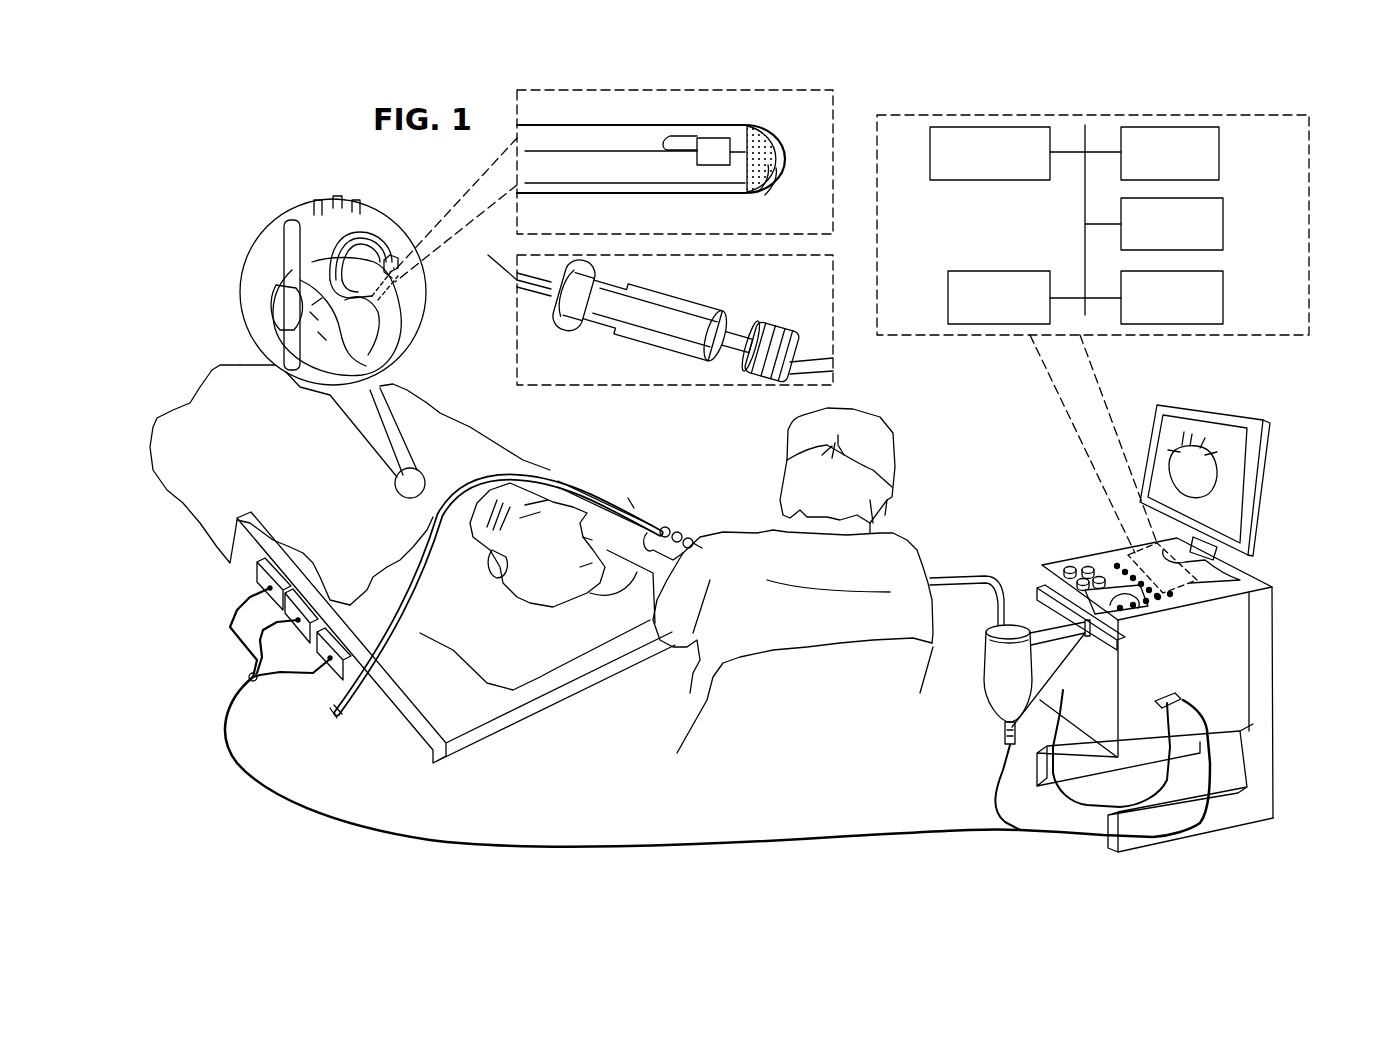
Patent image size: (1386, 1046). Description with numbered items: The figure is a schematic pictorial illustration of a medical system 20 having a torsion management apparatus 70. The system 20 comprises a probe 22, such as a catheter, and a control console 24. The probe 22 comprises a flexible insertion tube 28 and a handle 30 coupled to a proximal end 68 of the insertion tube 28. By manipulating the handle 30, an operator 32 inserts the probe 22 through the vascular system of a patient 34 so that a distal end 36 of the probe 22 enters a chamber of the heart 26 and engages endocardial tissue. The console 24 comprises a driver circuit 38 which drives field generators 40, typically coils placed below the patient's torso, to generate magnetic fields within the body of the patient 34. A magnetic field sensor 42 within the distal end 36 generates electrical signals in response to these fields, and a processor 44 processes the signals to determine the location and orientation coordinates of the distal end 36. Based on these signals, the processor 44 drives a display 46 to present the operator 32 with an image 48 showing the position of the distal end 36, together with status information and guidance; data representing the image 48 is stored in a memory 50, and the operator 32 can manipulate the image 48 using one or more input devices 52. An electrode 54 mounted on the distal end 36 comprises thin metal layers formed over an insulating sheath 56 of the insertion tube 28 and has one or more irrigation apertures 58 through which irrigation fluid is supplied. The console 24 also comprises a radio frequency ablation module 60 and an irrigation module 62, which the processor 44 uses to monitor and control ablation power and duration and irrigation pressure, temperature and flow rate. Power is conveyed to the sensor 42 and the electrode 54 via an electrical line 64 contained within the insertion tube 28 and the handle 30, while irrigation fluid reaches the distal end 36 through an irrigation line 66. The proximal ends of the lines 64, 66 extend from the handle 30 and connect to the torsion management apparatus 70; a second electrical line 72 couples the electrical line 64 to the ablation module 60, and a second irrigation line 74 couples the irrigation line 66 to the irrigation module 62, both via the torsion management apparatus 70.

The medical system 20 is at (276, 172).
The probe 22 is at (631, 510).
The control console 24 is at (1276, 574).
The heart 26 is at (403, 337).
The flexible insertion tube 28 is at (524, 296).
The handle 30 is at (686, 296).
The operator 32 is at (898, 556).
The patient 34 is at (508, 600).
The distal end 36 is at (366, 232).
The driver circuit 38 is at (948, 298).
The field generators 40 is at (262, 657).
The magnetic field sensor 42 is at (697, 157).
The processor 44 is at (930, 165).
The display 46 is at (1270, 425).
The image 48 is at (1200, 478).
The memory 50 is at (1221, 152).
The input devices 52 is at (1088, 566).
The electrode 54 is at (767, 128).
The insulating sheath 56 is at (368, 316).
The irrigation apertures 58 is at (750, 188).
The radio frequency ablation module 60 is at (1225, 230).
The irrigation module 62 is at (1225, 308).
The electrical line 64 is at (720, 138).
The irrigation line 66 is at (570, 183).
The proximal end 68 is at (508, 262).
The torsion management apparatus 70 is at (984, 692).
The electrical line 72 is at (1067, 700).
The irrigation line 74 is at (995, 792).